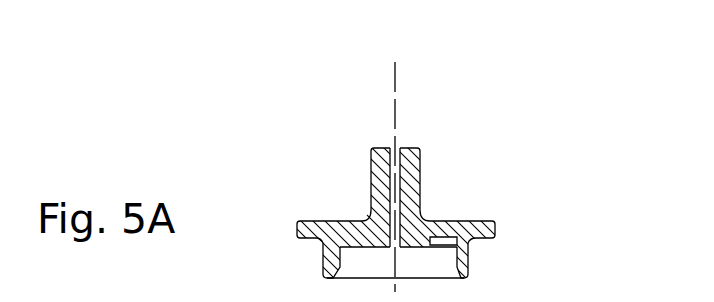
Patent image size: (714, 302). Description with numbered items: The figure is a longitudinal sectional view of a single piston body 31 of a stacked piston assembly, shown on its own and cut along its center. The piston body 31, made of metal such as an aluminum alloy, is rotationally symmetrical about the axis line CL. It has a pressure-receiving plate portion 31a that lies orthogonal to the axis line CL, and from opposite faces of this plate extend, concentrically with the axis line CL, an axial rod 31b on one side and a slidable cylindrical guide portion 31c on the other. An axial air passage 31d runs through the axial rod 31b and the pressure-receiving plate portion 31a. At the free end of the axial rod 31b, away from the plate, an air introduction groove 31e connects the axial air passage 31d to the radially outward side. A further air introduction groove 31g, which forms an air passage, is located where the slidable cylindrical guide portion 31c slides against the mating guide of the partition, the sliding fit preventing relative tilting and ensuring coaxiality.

The piston body 31 is at (409, 192).
The pressure-receiving plate portion 31a is at (350, 236).
The axial rod 31b is at (374, 160).
The slidable cylindrical guide portion 31c is at (323, 265).
The axial air passage 31d is at (400, 182).
The air introduction groove 31e is at (397, 150).
The air introduction groove 31g is at (466, 247).
The axis line CL is at (393, 97).